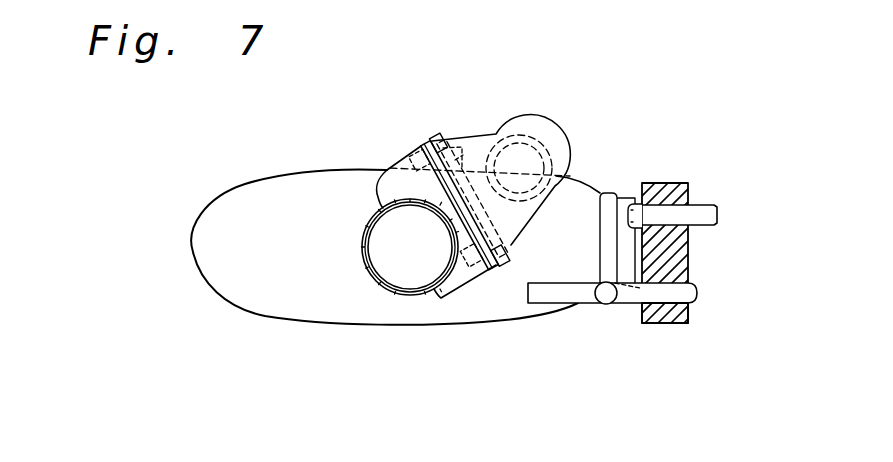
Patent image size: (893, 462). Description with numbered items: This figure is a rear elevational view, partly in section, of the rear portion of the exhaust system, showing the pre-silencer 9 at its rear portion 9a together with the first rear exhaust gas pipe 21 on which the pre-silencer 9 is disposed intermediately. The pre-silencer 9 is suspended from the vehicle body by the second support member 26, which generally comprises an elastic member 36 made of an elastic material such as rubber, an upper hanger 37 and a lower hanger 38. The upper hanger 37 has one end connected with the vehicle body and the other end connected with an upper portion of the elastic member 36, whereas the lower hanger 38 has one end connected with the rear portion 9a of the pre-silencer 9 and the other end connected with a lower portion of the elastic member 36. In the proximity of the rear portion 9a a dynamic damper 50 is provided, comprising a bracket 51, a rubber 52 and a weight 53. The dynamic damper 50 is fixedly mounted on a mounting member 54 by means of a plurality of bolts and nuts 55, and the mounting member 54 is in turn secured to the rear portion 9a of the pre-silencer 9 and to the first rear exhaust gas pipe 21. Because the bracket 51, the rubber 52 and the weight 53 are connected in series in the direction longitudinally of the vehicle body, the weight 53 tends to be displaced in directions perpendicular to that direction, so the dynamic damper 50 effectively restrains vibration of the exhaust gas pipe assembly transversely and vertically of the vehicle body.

The pre-silencer 9 is at (278, 166).
The rear portion of the pre-silencer 9a is at (282, 285).
The first rear exhaust gas pipe 21 is at (375, 282).
The second support member 26 is at (650, 174).
The elastic member 36 is at (658, 325).
The upper hanger 37 is at (705, 203).
The lower hanger 38 is at (575, 297).
The dynamic damper 50 is at (515, 98).
The bracket 51 is at (466, 138).
The rubber 52 is at (548, 143).
The weight 53 is at (482, 143).
The mounting member 54 is at (457, 283).
The bolts and nuts 55 is at (438, 137).